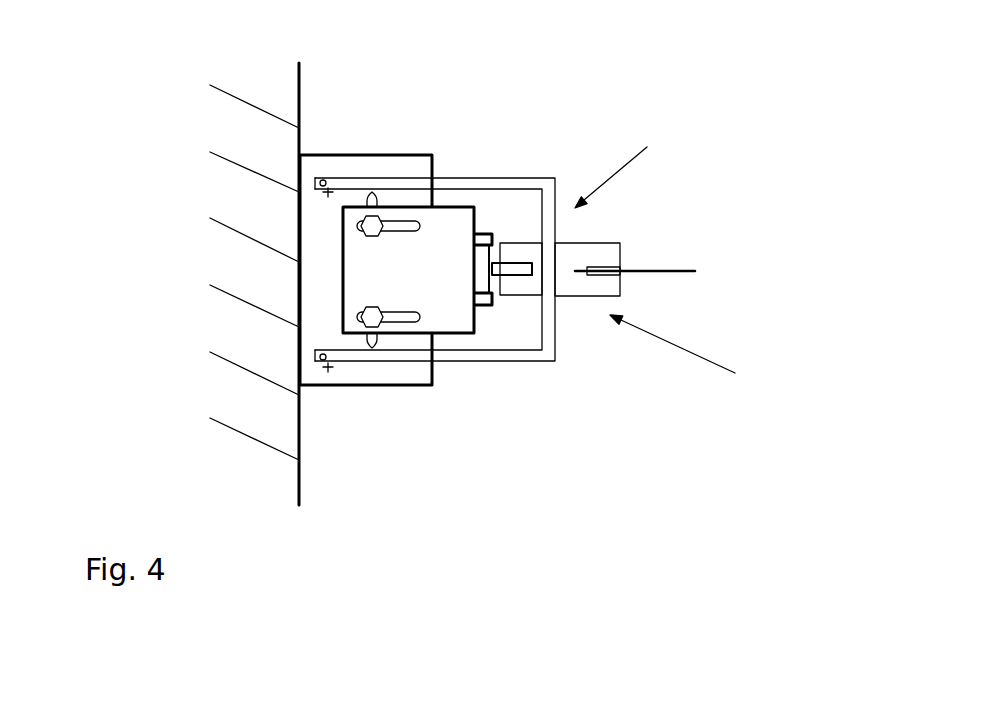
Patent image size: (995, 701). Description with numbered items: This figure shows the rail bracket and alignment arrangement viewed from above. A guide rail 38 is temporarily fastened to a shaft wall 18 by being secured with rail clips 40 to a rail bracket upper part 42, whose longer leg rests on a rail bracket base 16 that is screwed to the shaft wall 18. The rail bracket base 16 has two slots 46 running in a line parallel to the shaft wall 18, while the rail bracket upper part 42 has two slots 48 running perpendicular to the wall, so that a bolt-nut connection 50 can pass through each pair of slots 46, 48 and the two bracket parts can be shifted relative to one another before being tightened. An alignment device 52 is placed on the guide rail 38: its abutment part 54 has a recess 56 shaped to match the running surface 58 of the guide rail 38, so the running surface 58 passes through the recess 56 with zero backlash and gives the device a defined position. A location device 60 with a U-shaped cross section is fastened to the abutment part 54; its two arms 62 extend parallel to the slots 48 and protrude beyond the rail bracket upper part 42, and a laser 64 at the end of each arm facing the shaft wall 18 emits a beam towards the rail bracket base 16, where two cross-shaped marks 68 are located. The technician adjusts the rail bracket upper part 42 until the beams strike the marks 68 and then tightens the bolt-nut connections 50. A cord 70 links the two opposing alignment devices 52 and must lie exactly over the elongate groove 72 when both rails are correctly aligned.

The rail bracket base 16 is at (308, 157).
The shaft wall 18 is at (284, 90).
The guide rail 38 is at (492, 263).
The rail clips 40 is at (482, 258).
The rail bracket upper part 42 is at (450, 206).
The slots 46 is at (372, 192).
The slots 48 is at (388, 216).
The bolt-nut connection 50 is at (362, 224).
The alignment device 52 is at (692, 352).
The abutment part 54 is at (595, 252).
The recess 56 is at (522, 272).
The running surface 58 is at (510, 277).
The location device 60 is at (629, 162).
The arms 62 is at (490, 177).
The laser 64 is at (318, 176).
The marks 68 is at (328, 192).
The cord 70 is at (668, 268).
The groove 72 is at (613, 275).